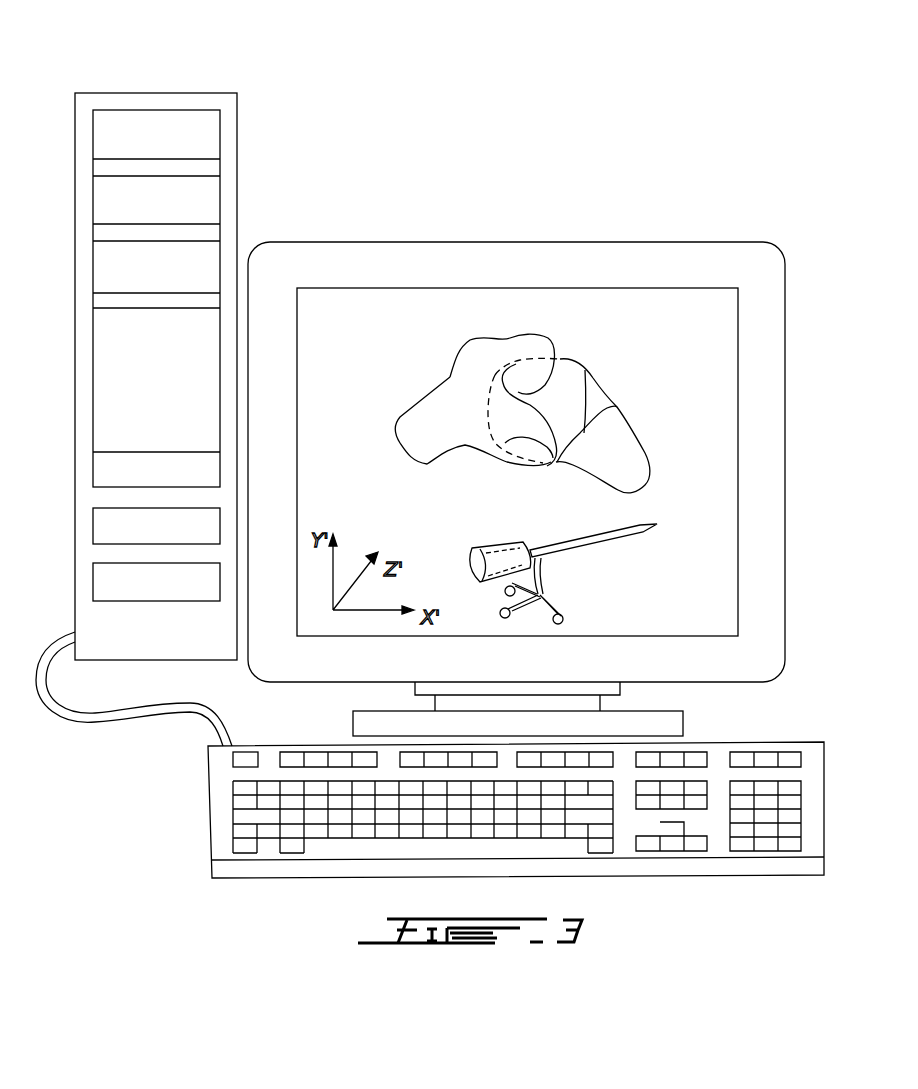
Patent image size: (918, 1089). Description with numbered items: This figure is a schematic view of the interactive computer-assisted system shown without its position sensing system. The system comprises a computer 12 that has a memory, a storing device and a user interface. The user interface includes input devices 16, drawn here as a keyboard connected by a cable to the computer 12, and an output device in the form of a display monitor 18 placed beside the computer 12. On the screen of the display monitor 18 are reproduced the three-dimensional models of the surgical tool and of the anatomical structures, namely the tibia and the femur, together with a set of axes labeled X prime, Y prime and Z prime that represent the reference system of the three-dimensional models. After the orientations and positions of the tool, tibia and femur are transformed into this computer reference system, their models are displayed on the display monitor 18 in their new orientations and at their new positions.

The computer 12 is at (83, 161).
The input devices 16 is at (240, 868).
The display monitor 18 is at (772, 284).